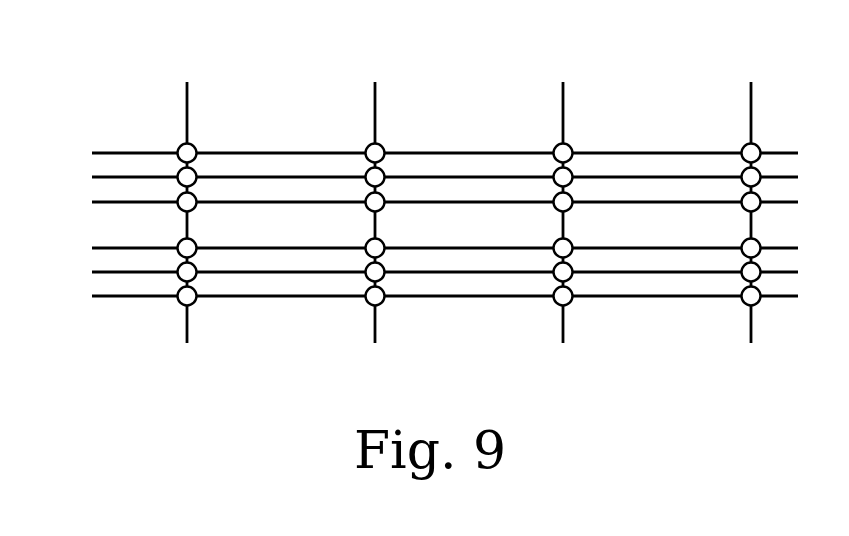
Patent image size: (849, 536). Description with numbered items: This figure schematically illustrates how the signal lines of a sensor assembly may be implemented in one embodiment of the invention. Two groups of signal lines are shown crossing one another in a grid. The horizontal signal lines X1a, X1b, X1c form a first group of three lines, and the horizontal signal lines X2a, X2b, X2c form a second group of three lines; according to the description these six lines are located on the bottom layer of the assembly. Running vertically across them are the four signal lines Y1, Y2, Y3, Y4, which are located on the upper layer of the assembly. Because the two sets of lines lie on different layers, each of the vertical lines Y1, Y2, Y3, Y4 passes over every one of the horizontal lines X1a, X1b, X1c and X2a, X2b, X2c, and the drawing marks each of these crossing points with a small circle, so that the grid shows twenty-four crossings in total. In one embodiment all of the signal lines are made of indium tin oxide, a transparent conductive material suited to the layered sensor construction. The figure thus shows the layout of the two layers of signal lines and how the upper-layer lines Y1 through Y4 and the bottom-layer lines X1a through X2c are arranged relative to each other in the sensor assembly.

The signal line Y1 is at (186, 197).
The signal line Y2 is at (374, 197).
The signal line Y3 is at (562, 197).
The signal line Y4 is at (750, 197).
The signal line X1a is at (425, 152).
The signal line X1b is at (425, 176).
The signal line X1c is at (425, 201).
The signal line X2a is at (425, 247).
The signal line X2b is at (425, 271).
The signal line X2c is at (425, 295).